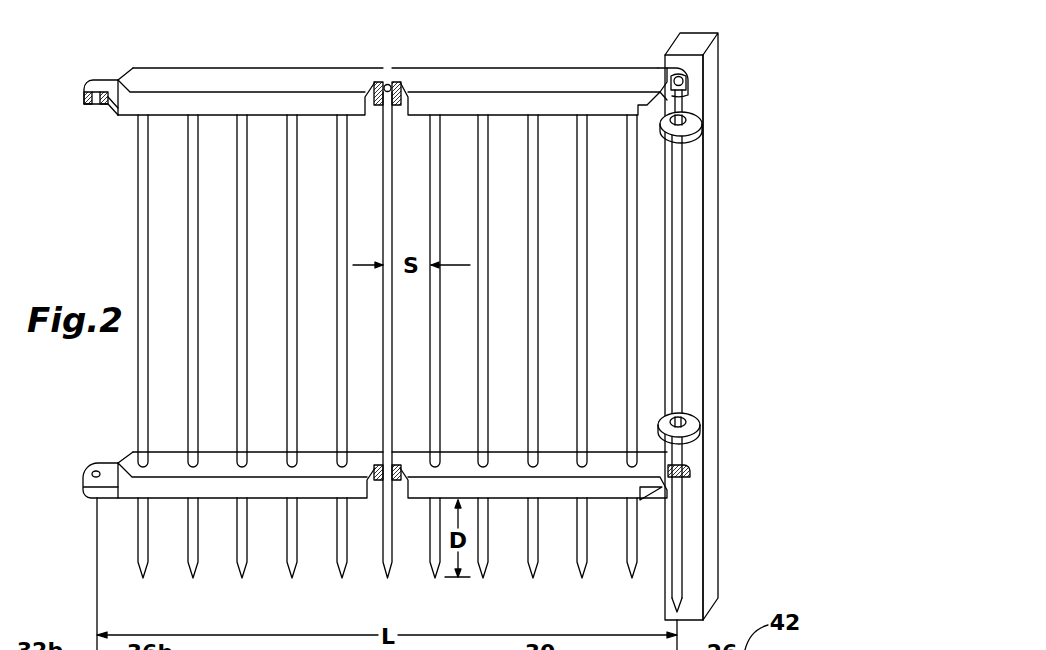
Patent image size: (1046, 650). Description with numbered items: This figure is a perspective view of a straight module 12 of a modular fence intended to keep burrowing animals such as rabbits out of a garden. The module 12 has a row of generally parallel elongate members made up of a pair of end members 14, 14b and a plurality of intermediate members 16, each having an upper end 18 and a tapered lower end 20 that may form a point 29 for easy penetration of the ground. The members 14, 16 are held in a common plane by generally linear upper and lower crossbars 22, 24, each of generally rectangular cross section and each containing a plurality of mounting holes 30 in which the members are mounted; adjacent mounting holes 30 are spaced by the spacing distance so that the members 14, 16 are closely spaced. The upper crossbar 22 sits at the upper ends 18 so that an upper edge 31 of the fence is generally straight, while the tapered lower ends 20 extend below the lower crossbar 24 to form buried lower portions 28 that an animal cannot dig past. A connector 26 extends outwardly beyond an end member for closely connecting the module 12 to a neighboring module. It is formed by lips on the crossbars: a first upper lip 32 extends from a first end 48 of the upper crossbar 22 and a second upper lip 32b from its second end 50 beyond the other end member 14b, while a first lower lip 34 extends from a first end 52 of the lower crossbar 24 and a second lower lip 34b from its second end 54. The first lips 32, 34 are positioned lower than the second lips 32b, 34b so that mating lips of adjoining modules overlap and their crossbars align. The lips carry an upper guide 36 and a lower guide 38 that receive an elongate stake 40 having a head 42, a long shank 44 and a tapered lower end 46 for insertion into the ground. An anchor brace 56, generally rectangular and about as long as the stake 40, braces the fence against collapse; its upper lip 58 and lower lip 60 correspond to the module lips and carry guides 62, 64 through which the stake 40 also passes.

The module 12 is at (112, 186).
The end member 14 is at (140, 215).
The other end member 14b is at (637, 217).
The intermediate member 16 is at (423, 367).
The upper end 18 is at (383, 97).
The tapered lower end 20 is at (294, 568).
The upper crossbar 22 is at (533, 62).
The lower crossbar 24 is at (576, 535).
The connector 26 is at (707, 58).
The buried lower portion 28 is at (210, 516).
The point 29 is at (193, 572).
The mounting hole 30 is at (377, 85).
The upper edge 31 is at (369, 62).
The first upper lip 32 is at (74, 92).
The second upper lip 32b is at (680, 35).
The first lower lip 34 is at (75, 442).
The second lower lip 34b is at (690, 467).
The upper guide 36 is at (95, 104).
The lower guide 38 is at (96, 470).
The elongate stake 40 is at (693, 175).
The head 42 is at (688, 77).
The long shank 44 is at (680, 323).
The tapered lower end of stake 46 is at (690, 604).
The first end of upper crossbar 48 is at (141, 70).
The second end of upper crossbar 50 is at (657, 73).
The first end of lower crossbar 52 is at (138, 487).
The second end of lower crossbar 54 is at (637, 490).
The anchor brace 56 is at (713, 360).
The upper lip of brace 58 is at (690, 137).
The lower lip of brace 60 is at (690, 447).
The upper guide of brace 62 is at (684, 110).
The lower guide of brace 64 is at (676, 426).